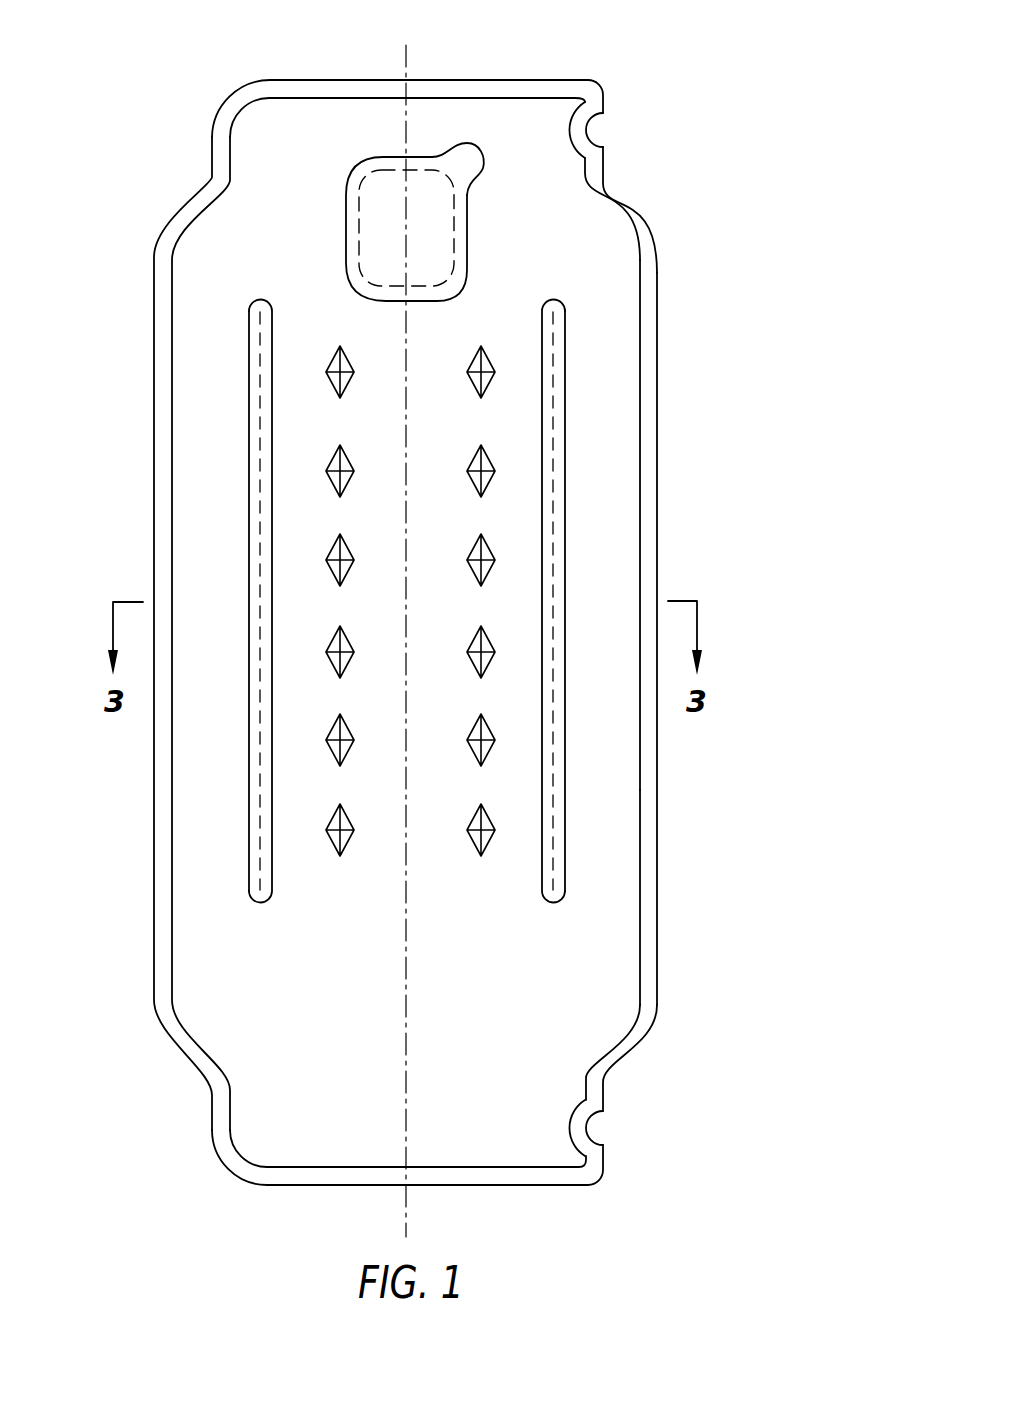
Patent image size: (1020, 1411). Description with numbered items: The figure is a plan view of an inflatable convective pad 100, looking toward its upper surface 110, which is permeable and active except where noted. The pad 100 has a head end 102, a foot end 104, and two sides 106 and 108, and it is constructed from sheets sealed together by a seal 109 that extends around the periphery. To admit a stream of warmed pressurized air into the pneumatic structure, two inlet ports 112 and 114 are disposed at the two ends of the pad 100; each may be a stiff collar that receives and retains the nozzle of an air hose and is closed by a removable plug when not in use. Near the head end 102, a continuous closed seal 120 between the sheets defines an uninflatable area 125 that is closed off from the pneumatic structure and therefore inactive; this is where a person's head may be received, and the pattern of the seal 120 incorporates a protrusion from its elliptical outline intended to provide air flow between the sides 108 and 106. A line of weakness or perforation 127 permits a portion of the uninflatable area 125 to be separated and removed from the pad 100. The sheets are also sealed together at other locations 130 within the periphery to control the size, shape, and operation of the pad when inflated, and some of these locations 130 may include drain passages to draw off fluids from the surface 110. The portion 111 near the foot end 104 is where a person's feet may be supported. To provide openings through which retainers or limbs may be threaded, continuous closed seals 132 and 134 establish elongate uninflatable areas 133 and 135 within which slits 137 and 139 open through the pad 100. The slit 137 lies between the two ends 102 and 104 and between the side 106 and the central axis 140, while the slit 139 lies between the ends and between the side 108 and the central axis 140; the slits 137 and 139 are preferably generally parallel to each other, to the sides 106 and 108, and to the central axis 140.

The inflatable convective pad 100 is at (752, 702).
The head end 102 is at (565, 80).
The foot end 104 is at (538, 1185).
The side 106 is at (152, 572).
The side 108 is at (657, 540).
The seal 109 is at (640, 843).
The upper surface 110 is at (510, 313).
The portion near the foot end 111 is at (597, 963).
The inlet port 112 is at (597, 115).
The inlet port 114 is at (590, 1105).
The continuous closed seal 120 is at (478, 178).
The uninflatable area 125 is at (420, 193).
The line of weakness or perforation 127 is at (357, 205).
The sealed locations 130 is at (492, 372).
The continuous closed seal 132 is at (248, 852).
The elongate uninflatable area 133 is at (267, 867).
The continuous closed seal 134 is at (563, 758).
The elongate uninflatable area 135 is at (540, 867).
The slit 137 is at (262, 742).
The slit 139 is at (552, 618).
The central axis 140 is at (407, 948).